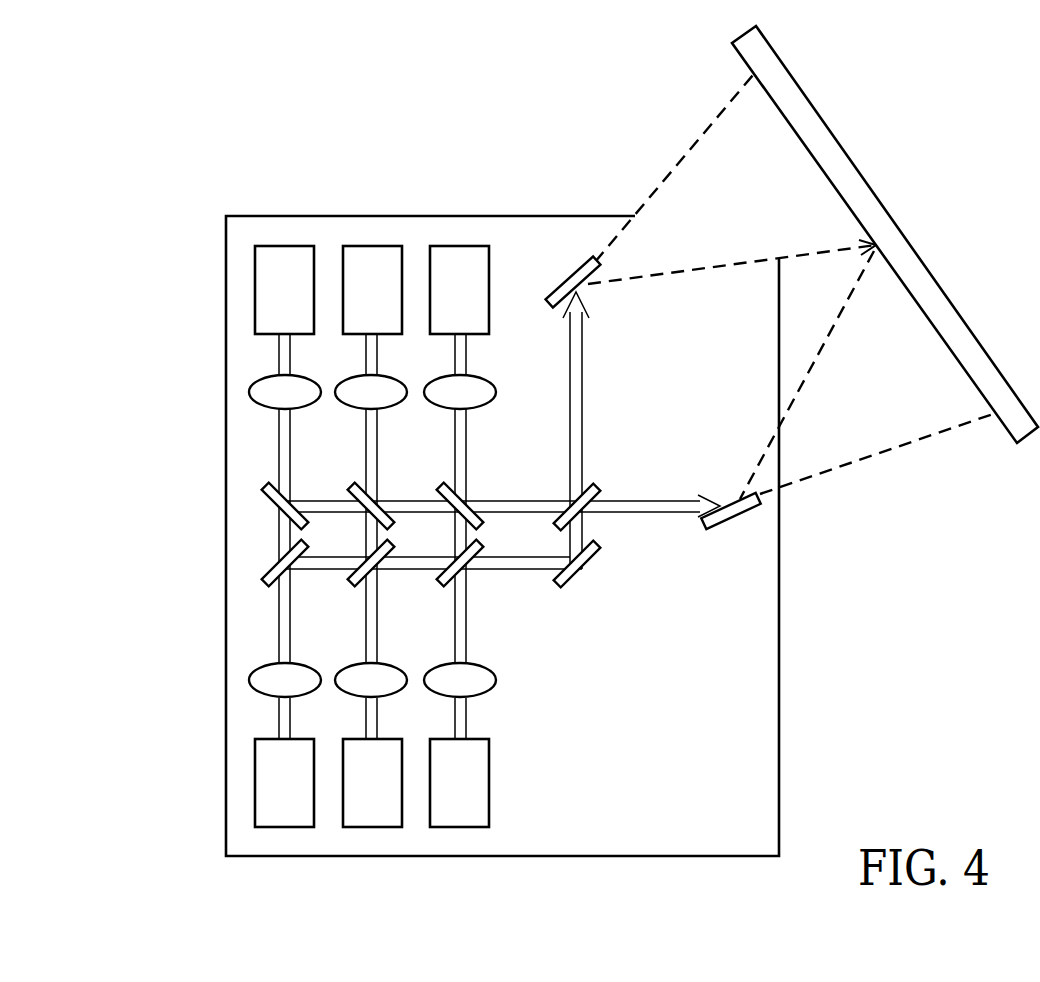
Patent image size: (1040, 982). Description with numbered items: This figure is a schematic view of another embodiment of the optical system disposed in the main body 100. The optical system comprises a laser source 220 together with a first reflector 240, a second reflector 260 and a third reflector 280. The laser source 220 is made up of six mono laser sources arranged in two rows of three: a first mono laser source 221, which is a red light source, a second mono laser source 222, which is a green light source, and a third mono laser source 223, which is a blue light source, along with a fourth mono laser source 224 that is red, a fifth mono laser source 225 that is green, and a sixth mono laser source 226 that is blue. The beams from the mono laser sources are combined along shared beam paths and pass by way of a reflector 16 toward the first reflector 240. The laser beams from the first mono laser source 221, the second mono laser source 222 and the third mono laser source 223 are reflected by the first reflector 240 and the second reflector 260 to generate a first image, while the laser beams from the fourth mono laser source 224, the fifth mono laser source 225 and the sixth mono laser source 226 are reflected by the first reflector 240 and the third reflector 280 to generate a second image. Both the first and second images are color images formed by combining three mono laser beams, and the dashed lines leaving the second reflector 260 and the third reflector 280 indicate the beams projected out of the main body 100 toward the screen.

The main body 100 is at (779, 694).
The laser source 220 is at (283, 536).
The first mono laser source 221 is at (255, 248).
The second mono laser source 222 is at (343, 284).
The third mono laser source 223 is at (430, 312).
The fourth mono laser source 224 is at (256, 818).
The fifth mono laser source 225 is at (343, 790).
The sixth mono laser source 226 is at (318, 783).
The first reflector 240 is at (598, 487).
The reflector 16 is at (577, 578).
The second reflector 260 is at (571, 279).
The third reflector 280 is at (736, 528).